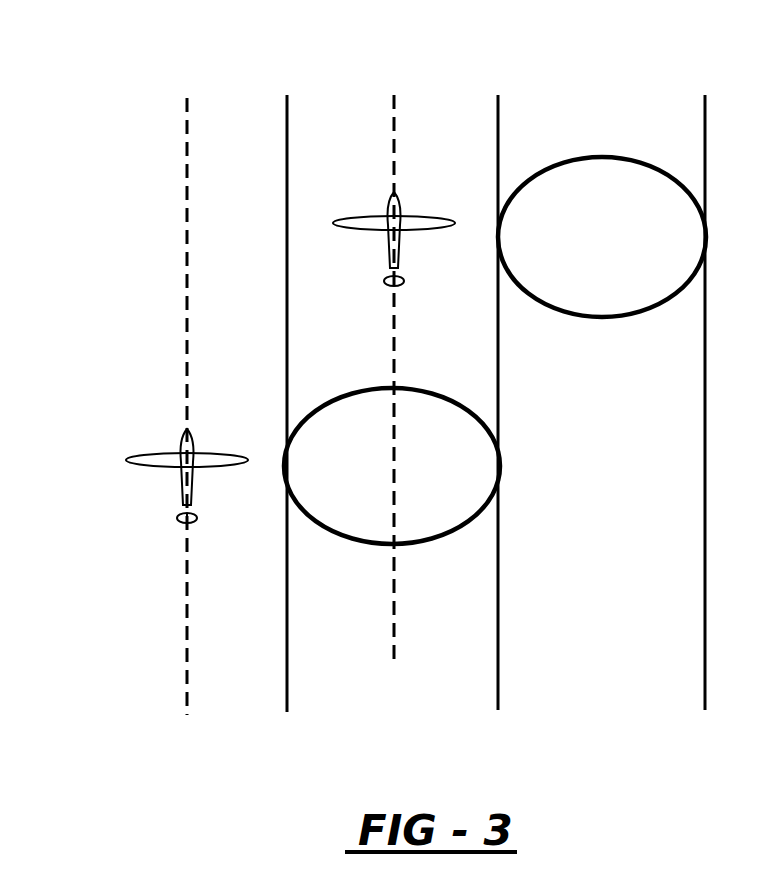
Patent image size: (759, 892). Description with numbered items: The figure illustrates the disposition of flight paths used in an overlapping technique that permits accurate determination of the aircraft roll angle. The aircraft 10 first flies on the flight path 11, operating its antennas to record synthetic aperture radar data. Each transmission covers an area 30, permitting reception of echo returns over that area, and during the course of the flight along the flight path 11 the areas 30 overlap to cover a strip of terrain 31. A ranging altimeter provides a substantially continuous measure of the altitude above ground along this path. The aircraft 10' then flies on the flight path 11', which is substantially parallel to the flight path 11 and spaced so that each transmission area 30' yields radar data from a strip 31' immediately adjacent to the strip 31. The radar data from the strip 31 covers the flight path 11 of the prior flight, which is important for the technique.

The aircraft 10 is at (387, 220).
The aircraft 10' is at (167, 449).
The flight path 11 is at (434, 361).
The flight path 11' is at (213, 391).
The area 30 is at (602, 269).
The area 30' is at (392, 438).
The strip of terrain 31 is at (601, 402).
The strip 31' is at (392, 403).